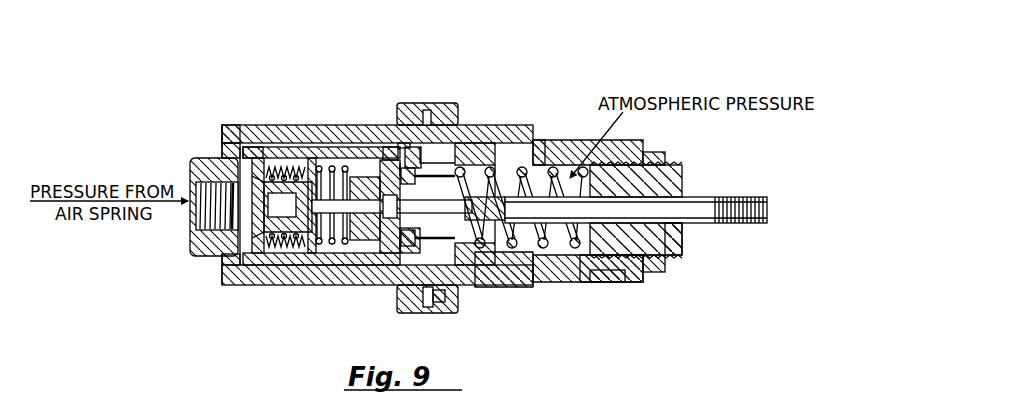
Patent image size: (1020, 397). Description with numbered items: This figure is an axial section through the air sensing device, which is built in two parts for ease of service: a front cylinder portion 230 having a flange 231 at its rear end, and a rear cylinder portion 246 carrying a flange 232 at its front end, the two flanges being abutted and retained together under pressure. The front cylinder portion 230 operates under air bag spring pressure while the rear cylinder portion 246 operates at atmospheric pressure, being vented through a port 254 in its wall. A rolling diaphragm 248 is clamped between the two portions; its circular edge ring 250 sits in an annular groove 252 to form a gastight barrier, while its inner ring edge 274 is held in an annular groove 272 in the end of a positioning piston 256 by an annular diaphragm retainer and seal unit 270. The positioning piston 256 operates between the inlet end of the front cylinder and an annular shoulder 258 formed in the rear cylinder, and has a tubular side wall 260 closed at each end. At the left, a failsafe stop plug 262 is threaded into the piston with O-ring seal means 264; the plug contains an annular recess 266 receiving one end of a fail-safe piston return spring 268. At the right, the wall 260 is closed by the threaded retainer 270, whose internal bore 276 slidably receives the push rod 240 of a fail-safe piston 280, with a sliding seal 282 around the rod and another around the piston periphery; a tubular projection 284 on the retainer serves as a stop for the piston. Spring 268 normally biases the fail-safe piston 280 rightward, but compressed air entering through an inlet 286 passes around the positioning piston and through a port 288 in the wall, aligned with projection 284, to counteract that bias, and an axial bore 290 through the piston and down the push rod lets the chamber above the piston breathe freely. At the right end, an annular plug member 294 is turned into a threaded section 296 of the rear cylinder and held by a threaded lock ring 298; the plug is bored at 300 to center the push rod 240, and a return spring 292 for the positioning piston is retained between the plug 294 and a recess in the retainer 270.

The front cylinder portion 230 is at (280, 121).
The flange 231 is at (410, 142).
The flange 232 is at (450, 103).
The push rod 240 is at (714, 200).
The rear cylinder portion 246 is at (520, 127).
The rolling diaphragm 248 is at (457, 262).
The circular edge ring 250 is at (436, 285).
The annular groove 252 is at (445, 290).
The port 254 is at (583, 282).
The positioning piston 256 is at (323, 143).
The annular shoulder 258 is at (535, 140).
The tubular side wall 260 is at (276, 148).
The failsafe stop plug 262 is at (234, 159).
The O-ring seal means 264 is at (228, 128).
The annular recess 266 is at (275, 162).
The fail-safe piston return spring 268 is at (276, 240).
The annular diaphragm retainer and seal unit 270 is at (493, 145).
The annular groove 272 is at (352, 256).
The inner ring edge 274 is at (404, 264).
The internal bore 276 is at (400, 144).
The fail-safe piston 280 is at (309, 248).
The sliding seal 282 is at (413, 165).
The tubular projection 284 is at (396, 142).
The inlet 286 is at (192, 184).
The port 288 is at (364, 264).
The axial bore 290 is at (474, 221).
The return spring 292 is at (513, 270).
The annular plug member 294 is at (683, 180).
The threaded section 296 is at (620, 278).
The threaded lock ring 298 is at (660, 152).
The bore 300 is at (681, 240).